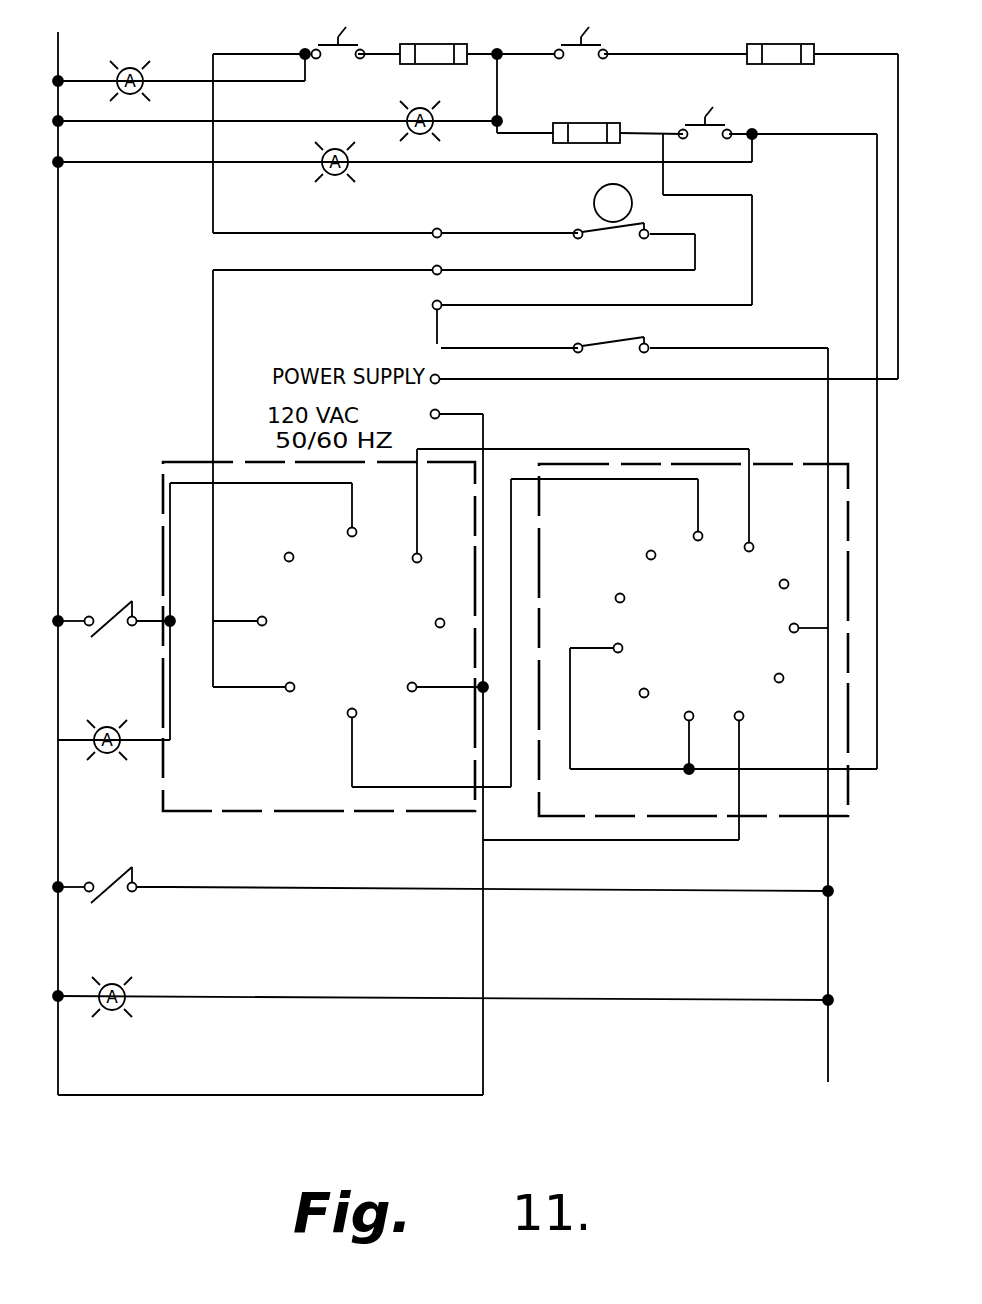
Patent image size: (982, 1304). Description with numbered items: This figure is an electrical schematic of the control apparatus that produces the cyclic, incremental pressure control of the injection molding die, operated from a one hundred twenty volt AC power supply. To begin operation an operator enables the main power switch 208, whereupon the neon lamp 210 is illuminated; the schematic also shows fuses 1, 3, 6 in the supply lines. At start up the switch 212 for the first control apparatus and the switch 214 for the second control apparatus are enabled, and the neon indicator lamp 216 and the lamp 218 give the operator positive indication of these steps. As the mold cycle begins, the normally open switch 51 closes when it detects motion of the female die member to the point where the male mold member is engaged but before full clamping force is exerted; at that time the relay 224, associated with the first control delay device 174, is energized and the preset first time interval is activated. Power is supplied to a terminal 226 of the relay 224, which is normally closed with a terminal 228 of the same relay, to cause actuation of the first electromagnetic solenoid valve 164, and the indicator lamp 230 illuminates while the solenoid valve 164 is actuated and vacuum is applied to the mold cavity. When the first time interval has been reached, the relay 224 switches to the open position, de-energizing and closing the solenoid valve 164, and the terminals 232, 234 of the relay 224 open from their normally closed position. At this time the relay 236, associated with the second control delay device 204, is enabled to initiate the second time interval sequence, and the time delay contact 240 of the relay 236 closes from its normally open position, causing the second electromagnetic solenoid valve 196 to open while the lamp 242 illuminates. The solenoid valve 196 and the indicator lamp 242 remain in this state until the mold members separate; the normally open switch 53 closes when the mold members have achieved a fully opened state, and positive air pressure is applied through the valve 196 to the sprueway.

The neon indicator lamp 216 is at (128, 64).
The neon lamp 210 is at (437, 111).
The lamp 218 is at (358, 180).
The switch 212 is at (368, 33).
The main power switch 208 is at (655, 46).
The switch 214 is at (737, 128).
The fuse 2A 1 is at (780, 70).
The fuse 1A 3 is at (433, 64).
The fuse 1A 6 is at (586, 143).
The switch 51 is at (643, 212).
The switch 53 is at (650, 363).
The first electromagnetic solenoid valve 164 is at (108, 616).
The second electromagnetic solenoid valve 196 is at (112, 873).
The first control delay device 174 is at (319, 667).
The second control delay device 204 is at (693, 672).
The terminal 228 is at (356, 522).
The terminal 232 is at (421, 549).
The terminal 226 is at (285, 692).
The terminal 234 is at (357, 716).
The relay 224 is at (327, 690).
The indicator lamp 230 is at (122, 752).
The relay 236 is at (814, 497).
The time delay contact 240 is at (684, 720).
The lamp 242 is at (137, 1012).